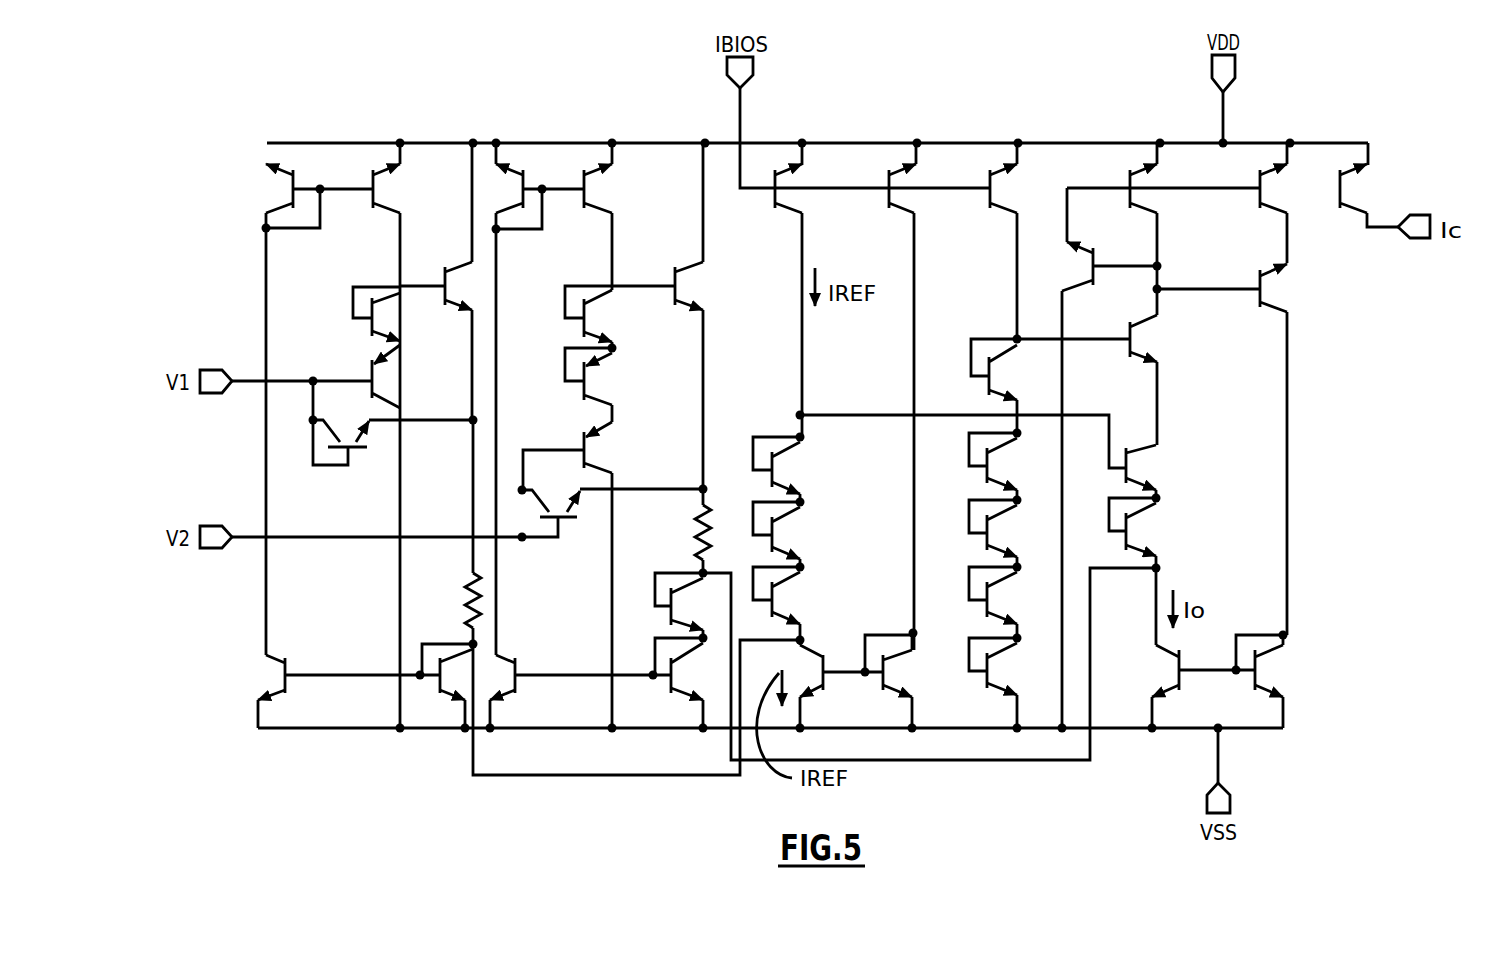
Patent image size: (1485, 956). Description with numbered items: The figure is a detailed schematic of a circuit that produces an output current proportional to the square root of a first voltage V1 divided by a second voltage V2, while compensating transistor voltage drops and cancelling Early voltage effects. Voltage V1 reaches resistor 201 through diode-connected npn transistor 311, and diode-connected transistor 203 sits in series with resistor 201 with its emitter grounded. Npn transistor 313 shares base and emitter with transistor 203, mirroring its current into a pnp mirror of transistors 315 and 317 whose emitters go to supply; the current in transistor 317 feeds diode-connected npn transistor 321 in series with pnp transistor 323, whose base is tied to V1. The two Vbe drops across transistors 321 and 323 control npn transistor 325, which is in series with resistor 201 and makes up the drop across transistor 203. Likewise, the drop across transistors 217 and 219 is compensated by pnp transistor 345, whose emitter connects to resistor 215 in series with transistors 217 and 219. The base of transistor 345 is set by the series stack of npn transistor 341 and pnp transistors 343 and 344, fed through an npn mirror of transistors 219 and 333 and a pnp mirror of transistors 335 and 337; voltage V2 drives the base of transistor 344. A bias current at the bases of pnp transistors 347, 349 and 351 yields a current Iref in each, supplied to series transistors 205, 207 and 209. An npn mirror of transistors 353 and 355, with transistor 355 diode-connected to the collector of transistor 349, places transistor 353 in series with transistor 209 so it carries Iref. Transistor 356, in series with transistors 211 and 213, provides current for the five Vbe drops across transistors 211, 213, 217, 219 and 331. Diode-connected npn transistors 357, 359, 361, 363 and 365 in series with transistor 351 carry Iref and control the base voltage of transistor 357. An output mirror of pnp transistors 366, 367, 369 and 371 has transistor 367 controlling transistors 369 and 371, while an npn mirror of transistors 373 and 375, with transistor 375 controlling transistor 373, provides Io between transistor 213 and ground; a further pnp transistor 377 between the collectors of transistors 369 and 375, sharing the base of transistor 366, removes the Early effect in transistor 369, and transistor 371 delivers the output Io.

The resistor 201 is at (462, 593).
The diode connected transistor 203 is at (441, 690).
The transistor 205 is at (783, 468).
The transistor 207 is at (783, 535).
The transistor 209 is at (783, 603).
The transistor 211 is at (1140, 468).
The transistor 213 is at (1140, 533).
The resistor 215 is at (694, 549).
The transistor 217 is at (665, 621).
The npn transistor 219 is at (669, 687).
The diode connected npn transistor 311 is at (352, 435).
The npn transistor 313 is at (275, 678).
The pnp transistor 315 is at (283, 190).
The pnp transistor 317 is at (382, 192).
The diode connected npn transistor 321 is at (387, 313).
The pnp transistor 323 is at (386, 383).
The npn transistor 325 is at (442, 278).
The transistor 331 is at (559, 505).
The npn transistor 333 is at (516, 662).
The pnp transistor 335 is at (534, 177).
The pnp transistor 337 is at (598, 191).
The npn transistor 341 is at (600, 313).
The pnp transistor 343 is at (600, 380).
The pnp transistor 344 is at (598, 448).
The pnp transistor 345 is at (692, 288).
The pnp transistor 347 is at (797, 194).
The pnp transistor 349 is at (912, 195).
The pnp transistor 351 is at (1007, 191).
The npn transistor 353 is at (823, 659).
The npn transistor 355 is at (897, 672).
The transistor 356 is at (1143, 338).
The npn transistor 357 is at (1003, 372).
The npn transistor 359 is at (1005, 467).
The npn transistor 361 is at (1005, 534).
The npn transistor 363 is at (1005, 601).
The npn transistor 365 is at (1000, 672).
The pnp transistor 366 is at (1080, 267).
The pnp transistor 367 is at (1153, 193).
The pnp transistor 369 is at (1283, 193).
The pnp transistor 371 is at (1355, 188).
The npn transistor 373 is at (1163, 668).
The npn transistor 375 is at (1270, 668).
The transistor 377 is at (1272, 292).